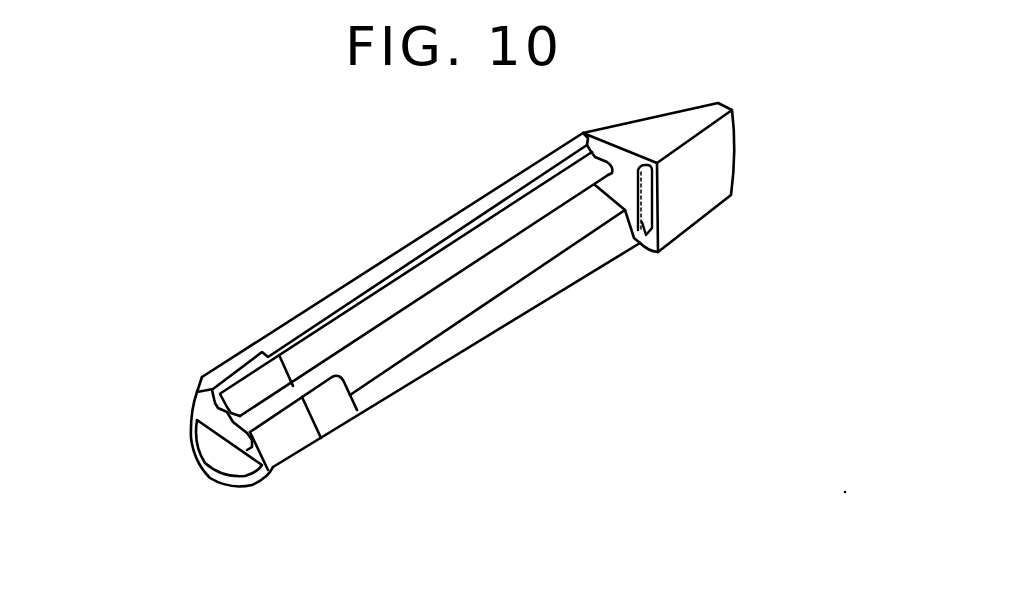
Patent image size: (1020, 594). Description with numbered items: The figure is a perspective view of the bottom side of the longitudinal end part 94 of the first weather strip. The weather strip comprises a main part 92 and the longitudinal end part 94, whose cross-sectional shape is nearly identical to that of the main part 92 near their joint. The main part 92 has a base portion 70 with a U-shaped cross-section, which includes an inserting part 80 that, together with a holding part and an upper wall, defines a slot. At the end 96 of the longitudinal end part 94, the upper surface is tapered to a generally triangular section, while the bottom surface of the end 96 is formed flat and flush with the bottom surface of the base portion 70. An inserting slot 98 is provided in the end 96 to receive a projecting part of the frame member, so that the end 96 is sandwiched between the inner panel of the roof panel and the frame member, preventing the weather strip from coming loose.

The base portion 70 is at (222, 432).
The inserting part 80 is at (206, 403).
The main part 92 is at (290, 442).
The longitudinal end part 94 is at (480, 327).
The end 96 is at (695, 195).
The inserting slot 98 is at (638, 243).